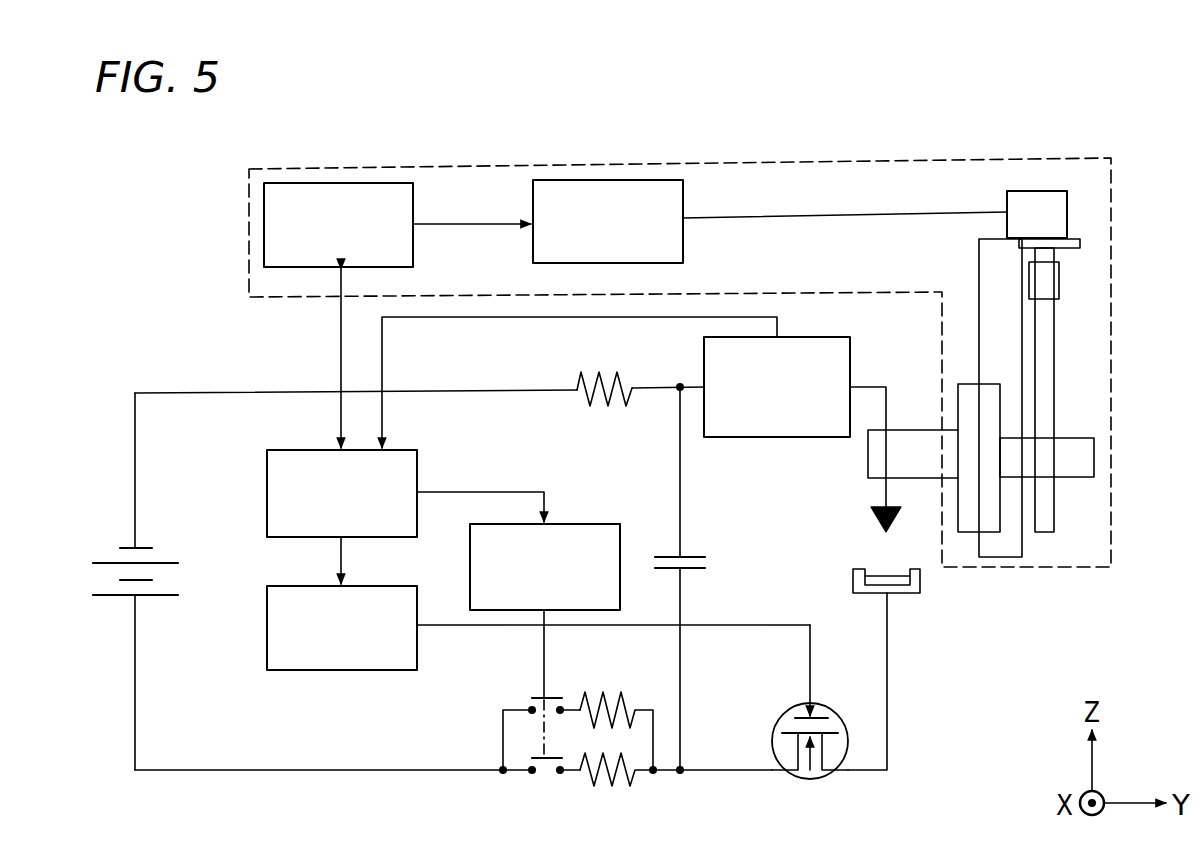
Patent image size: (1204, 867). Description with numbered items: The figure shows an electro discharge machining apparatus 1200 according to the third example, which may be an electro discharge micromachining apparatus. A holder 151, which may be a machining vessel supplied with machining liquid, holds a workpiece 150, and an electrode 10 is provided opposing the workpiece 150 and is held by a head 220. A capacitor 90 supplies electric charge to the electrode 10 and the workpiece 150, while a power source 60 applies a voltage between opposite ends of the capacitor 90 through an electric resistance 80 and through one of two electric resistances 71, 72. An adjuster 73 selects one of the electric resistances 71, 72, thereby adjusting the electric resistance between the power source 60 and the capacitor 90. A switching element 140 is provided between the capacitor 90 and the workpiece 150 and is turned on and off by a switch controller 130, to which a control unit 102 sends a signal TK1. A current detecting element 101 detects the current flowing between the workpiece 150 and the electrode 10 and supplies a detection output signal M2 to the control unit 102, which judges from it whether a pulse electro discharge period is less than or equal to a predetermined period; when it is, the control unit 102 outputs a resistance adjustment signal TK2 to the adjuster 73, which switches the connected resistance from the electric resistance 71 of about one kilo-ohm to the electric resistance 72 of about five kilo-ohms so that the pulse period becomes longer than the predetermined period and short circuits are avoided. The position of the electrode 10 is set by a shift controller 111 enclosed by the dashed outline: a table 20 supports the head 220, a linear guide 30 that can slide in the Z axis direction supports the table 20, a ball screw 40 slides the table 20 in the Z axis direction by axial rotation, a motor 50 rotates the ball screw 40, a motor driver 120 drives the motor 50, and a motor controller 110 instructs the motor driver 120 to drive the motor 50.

The electro discharge machining apparatus 1200 is at (1078, 76).
The shift controller 111 is at (1111, 203).
The motor controller 110 is at (363, 183).
The motor driver 120 is at (633, 180).
The motor 50 is at (1040, 191).
The ball screw 40 is at (1054, 321).
The linear guide 30 is at (1007, 335).
The table 20 is at (991, 494).
The head 220 is at (868, 471).
The electrode 10 is at (876, 523).
The workpiece 150 is at (918, 585).
The holder 151 is at (903, 593).
The switching element 140 is at (812, 777).
The capacitor 90 is at (692, 553).
The electric resistance 80 is at (609, 406).
The electric resistance 71 is at (603, 690).
The electric resistance 72 is at (612, 784).
The adjuster 73 is at (566, 524).
The power source 60 is at (127, 546).
The control unit 102 is at (267, 477).
The switch controller 130 is at (383, 670).
The current detecting element 101 is at (850, 358).
The detection output signal M2 is at (457, 320).
The control signal TK1 is at (337, 550).
The resistance adjustment signal TK2 is at (483, 492).